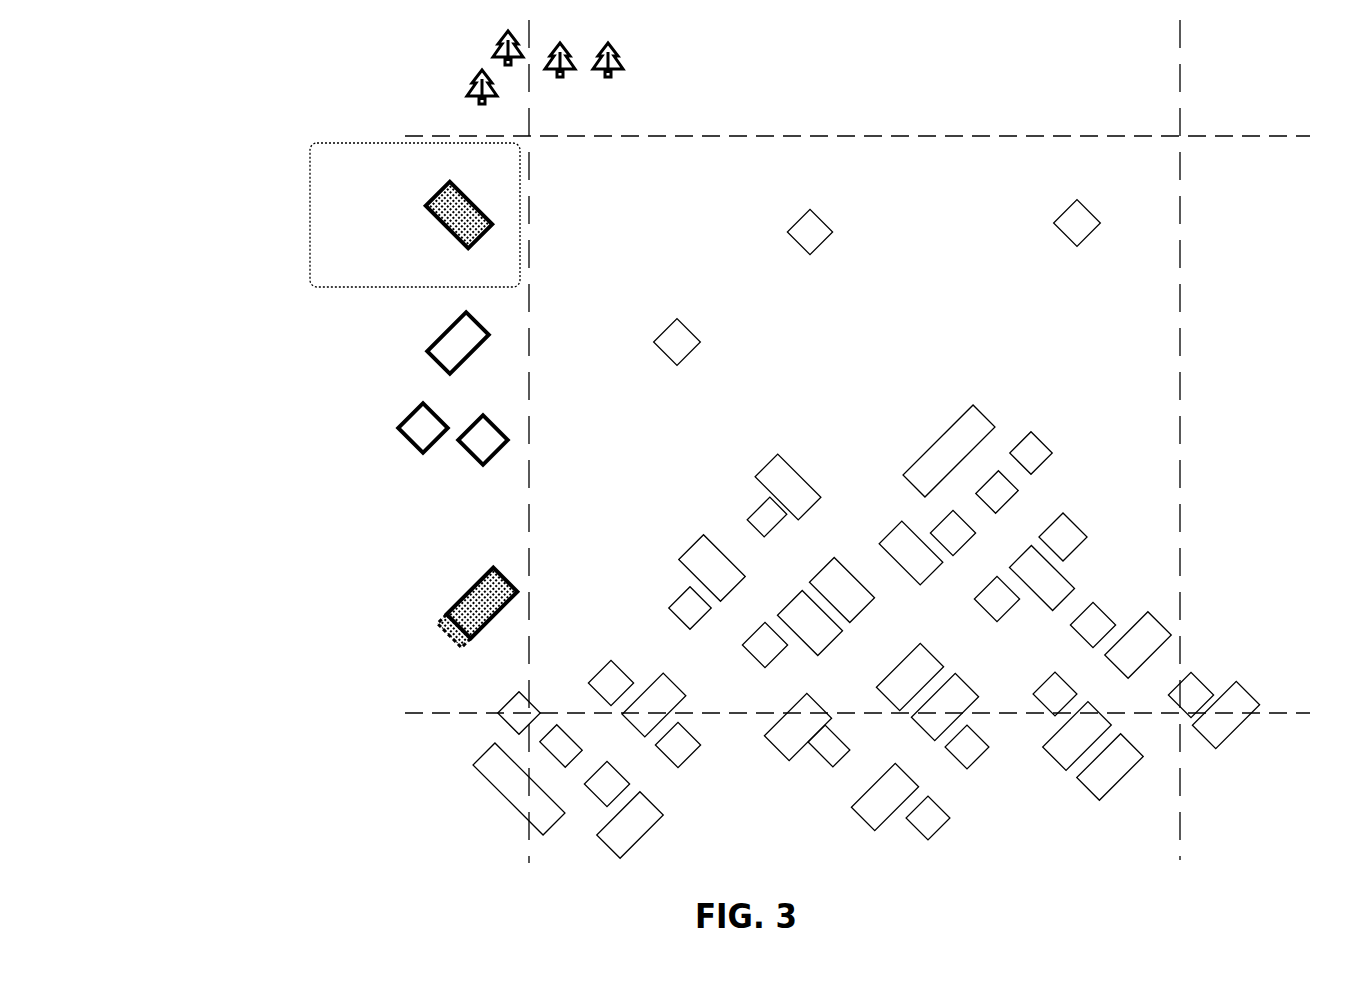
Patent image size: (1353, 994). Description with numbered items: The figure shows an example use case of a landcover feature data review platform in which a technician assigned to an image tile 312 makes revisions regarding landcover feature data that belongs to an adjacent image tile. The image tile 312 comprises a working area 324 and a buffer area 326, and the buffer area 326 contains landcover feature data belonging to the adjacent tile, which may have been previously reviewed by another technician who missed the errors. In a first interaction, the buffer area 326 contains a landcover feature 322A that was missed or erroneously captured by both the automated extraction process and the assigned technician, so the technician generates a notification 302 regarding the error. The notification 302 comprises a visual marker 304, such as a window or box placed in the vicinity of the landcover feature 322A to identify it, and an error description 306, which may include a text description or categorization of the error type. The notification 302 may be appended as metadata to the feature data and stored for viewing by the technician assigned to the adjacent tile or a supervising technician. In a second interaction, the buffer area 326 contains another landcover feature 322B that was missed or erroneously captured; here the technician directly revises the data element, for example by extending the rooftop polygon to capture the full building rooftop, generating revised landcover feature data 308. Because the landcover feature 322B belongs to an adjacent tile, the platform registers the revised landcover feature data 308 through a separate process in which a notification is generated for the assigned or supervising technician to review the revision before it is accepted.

The notification 302 is at (455, 132).
The visual marker 304 is at (500, 177).
The error description 306 is at (388, 260).
The revised landcover feature data 308 is at (398, 701).
The image tile 312 is at (873, 89).
The landcover feature 322A is at (438, 253).
The landcover feature 322B is at (458, 579).
The working area 324 is at (943, 396).
The buffer area 326 is at (357, 412).